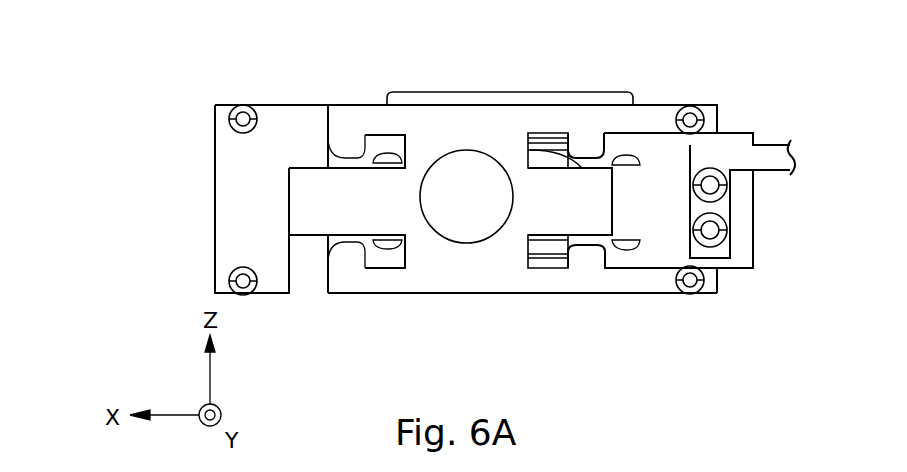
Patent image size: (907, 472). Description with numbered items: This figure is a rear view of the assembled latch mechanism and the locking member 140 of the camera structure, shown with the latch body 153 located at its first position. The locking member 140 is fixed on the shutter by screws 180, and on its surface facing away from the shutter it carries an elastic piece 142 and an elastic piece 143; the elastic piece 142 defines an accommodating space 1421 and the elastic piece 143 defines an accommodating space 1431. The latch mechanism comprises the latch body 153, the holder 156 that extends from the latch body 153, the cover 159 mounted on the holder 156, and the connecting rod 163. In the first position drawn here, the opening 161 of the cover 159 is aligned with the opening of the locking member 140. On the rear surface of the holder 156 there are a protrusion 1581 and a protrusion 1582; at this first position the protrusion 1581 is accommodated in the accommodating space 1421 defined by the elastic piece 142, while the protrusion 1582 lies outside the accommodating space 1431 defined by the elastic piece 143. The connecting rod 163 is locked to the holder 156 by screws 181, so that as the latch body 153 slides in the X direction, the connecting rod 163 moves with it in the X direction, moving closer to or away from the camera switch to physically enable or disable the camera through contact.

The locking member 140 is at (215, 202).
The elastic piece 142 is at (345, 148).
The accommodating space 1421 is at (392, 133).
The elastic piece 143 is at (588, 150).
The accommodating space 1431 is at (535, 133).
The latch body 153 is at (578, 93).
The holder 156 is at (733, 140).
The protrusion 1581 is at (385, 153).
The protrusion 1582 is at (638, 157).
The cover 159 is at (567, 237).
The opening 161 is at (467, 165).
The connecting rod 163 is at (779, 146).
The screws 180 is at (243, 105).
The screws 181 is at (713, 242).